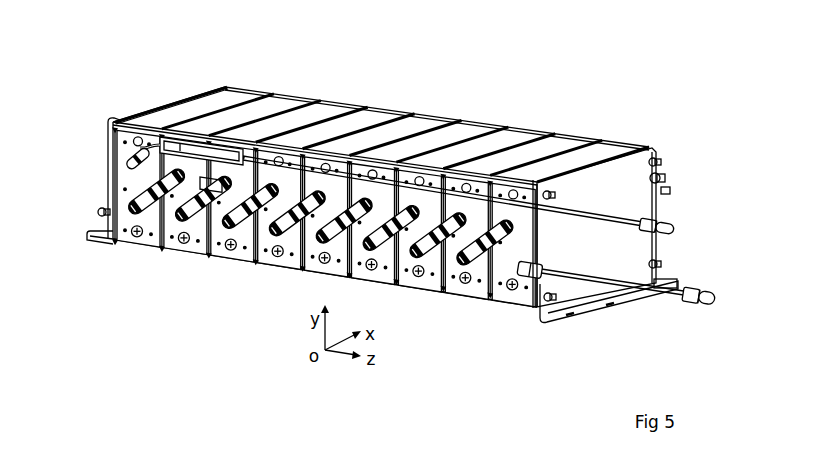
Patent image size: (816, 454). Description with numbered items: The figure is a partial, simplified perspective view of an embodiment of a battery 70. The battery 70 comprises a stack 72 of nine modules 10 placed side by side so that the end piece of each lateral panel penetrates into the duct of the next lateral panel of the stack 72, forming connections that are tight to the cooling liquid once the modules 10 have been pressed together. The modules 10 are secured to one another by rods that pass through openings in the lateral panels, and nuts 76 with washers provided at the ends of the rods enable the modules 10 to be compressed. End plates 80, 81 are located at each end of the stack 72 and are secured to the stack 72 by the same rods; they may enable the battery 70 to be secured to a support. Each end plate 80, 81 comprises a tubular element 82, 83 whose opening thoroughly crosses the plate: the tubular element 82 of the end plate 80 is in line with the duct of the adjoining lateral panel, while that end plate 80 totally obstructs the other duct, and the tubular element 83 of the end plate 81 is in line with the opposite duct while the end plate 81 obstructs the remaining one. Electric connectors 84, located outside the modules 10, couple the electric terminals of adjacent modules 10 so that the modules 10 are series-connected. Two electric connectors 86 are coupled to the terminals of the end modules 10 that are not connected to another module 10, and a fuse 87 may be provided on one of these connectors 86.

The battery 70 is at (576, 86).
The stack 72 is at (396, 106).
The module 10 is at (236, 95).
The electric connector 84 is at (294, 240).
The electric connector 86 is at (607, 219).
The fuse 87 is at (197, 147).
The end plate 80 is at (648, 248).
The nut 76 is at (660, 161).
The tubular element 82 is at (666, 180).
The tubular element 83 is at (100, 210).
The end plate 81 is at (101, 243).